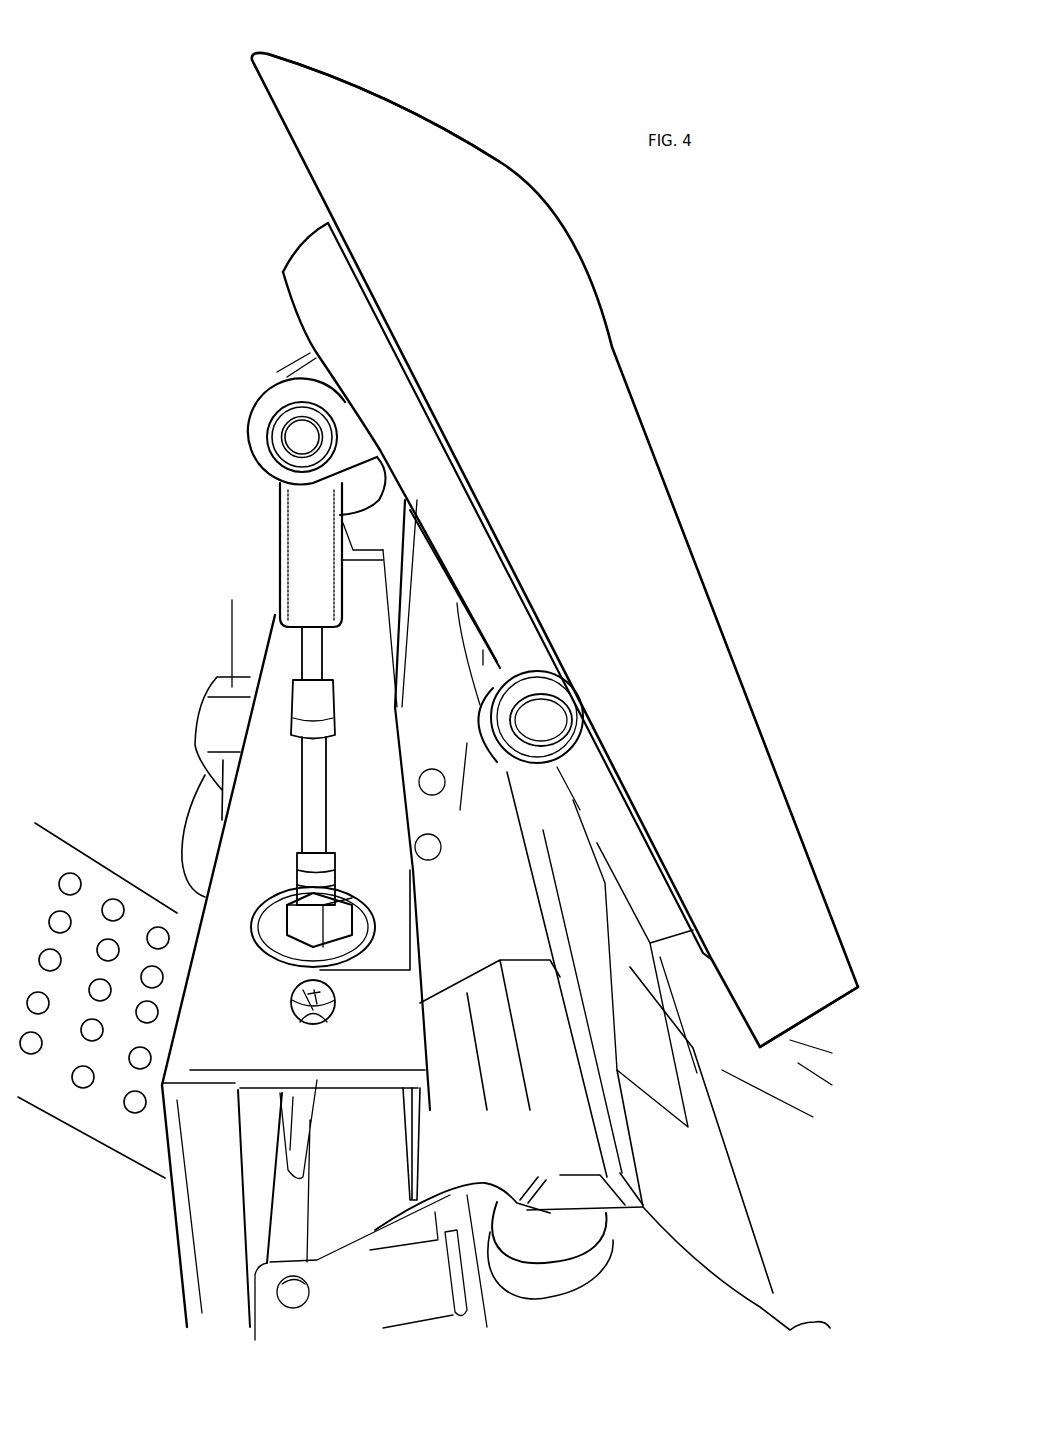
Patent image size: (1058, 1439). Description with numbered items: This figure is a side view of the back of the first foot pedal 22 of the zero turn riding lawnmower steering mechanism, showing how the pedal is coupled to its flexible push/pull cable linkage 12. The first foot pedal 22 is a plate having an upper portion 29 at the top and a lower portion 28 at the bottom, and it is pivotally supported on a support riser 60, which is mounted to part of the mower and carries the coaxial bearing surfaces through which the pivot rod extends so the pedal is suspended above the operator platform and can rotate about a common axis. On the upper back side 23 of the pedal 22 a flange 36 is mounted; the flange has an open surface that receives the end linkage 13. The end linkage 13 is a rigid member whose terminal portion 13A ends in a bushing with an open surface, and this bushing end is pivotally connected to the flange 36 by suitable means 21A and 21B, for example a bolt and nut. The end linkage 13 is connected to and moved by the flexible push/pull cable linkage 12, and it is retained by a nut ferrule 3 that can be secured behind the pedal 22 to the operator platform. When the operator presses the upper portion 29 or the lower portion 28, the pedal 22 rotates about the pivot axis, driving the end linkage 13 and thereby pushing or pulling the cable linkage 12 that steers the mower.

The nut ferrule 3 is at (292, 898).
The flexible push/pull cable linkage 12 is at (302, 1152).
The end linkage 13 is at (300, 665).
The terminal portion 13A is at (279, 569).
The suitable means 21A is at (268, 437).
The suitable means 21B is at (296, 412).
The first foot pedal 22 is at (636, 412).
The upper back side 23 is at (281, 271).
The lower portion 28 is at (817, 1012).
The upper portion 29 is at (262, 52).
The flange 36 is at (340, 515).
The support riser 60 is at (460, 797).